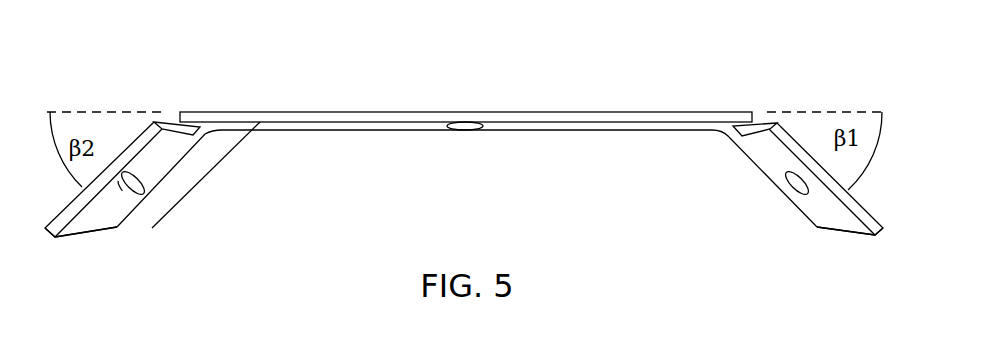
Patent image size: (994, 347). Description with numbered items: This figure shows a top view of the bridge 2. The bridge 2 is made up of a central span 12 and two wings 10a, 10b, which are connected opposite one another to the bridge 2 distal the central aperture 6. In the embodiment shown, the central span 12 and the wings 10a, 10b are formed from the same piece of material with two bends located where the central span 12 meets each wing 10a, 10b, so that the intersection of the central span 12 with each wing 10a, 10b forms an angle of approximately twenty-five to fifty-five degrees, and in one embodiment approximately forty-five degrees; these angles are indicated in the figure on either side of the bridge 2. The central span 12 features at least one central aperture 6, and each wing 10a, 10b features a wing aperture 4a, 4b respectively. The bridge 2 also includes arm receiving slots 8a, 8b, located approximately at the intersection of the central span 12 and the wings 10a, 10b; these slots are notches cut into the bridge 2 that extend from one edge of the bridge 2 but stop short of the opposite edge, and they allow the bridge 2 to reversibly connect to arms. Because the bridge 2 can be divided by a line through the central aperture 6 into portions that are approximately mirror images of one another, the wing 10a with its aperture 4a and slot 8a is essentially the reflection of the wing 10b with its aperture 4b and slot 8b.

The bridge 2 is at (464, 166).
The wing aperture 4a is at (788, 186).
The wing aperture 4b is at (144, 186).
The central aperture 6 is at (465, 130).
The arm receiving slot 8a is at (753, 117).
The arm receiving slot 8b is at (178, 117).
The wing 10a is at (839, 222).
The wing 10b is at (89, 222).
The central span 12 is at (353, 115).